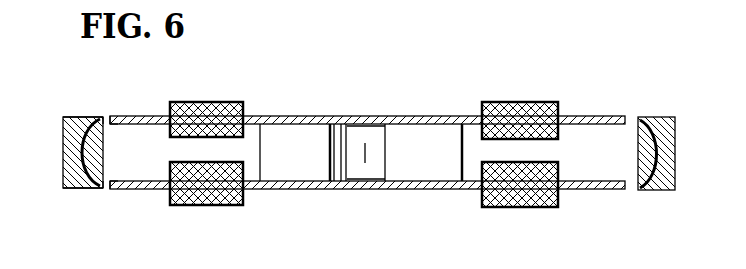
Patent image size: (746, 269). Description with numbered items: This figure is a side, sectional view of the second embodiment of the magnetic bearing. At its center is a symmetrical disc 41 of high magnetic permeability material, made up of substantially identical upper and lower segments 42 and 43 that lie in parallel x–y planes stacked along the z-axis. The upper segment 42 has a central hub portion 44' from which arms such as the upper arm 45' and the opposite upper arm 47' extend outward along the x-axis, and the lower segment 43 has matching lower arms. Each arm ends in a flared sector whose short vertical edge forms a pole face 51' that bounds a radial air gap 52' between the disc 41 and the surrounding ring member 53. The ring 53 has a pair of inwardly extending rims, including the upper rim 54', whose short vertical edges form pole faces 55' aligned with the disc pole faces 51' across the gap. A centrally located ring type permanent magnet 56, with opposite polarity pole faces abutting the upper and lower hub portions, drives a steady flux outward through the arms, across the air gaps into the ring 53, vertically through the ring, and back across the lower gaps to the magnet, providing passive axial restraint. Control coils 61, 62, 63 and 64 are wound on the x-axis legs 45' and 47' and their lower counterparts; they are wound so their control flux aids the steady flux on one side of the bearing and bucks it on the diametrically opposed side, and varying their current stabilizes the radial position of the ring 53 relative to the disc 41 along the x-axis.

The central symmetrical disc 41 is at (398, 87).
The upper segment 42 is at (446, 116).
The lower segment 43 is at (443, 190).
The upper hub portion 44' is at (303, 90).
The upper arm 45' is at (185, 90).
The upper arm 47' is at (543, 93).
The upper pole face 51' is at (132, 90).
The upper air gap 52' is at (97, 90).
The ring member 53 is at (68, 176).
The upper rim 54' is at (73, 93).
The upper ring pole face 55' is at (123, 140).
The ring type permanent magnet 56 is at (327, 167).
The control coil 61 is at (242, 102).
The control coil 62 is at (535, 102).
The control coil 63 is at (215, 206).
The control coil 64 is at (517, 208).